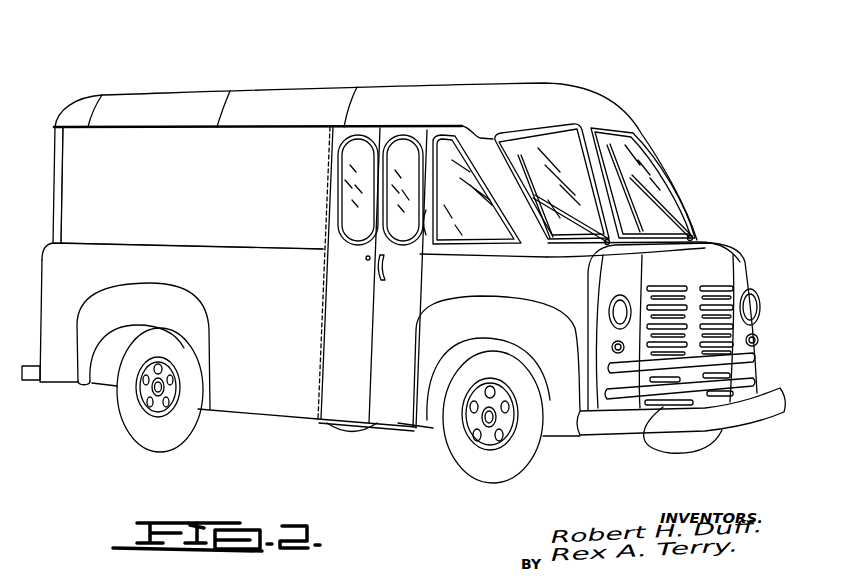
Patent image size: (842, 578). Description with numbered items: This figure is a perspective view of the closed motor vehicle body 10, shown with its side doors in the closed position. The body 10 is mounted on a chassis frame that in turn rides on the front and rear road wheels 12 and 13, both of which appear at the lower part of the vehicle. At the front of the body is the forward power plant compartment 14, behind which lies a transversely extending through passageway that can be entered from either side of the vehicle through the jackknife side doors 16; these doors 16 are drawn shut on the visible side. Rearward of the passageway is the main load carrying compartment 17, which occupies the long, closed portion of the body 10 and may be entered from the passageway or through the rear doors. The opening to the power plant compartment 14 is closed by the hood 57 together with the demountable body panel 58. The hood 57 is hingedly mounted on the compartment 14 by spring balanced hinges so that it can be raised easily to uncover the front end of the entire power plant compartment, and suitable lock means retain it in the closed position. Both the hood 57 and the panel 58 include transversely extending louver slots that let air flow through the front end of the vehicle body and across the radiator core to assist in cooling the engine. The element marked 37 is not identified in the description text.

The closed motor vehicle body 10 is at (266, 90).
The front road wheels 12 is at (536, 468).
The rear road wheels 13 is at (133, 411).
The forward power plant compartment 14 is at (742, 256).
The jackknife side doors 16 is at (338, 312).
The main load carrying compartment 17 is at (180, 170).
The grille 37 is at (690, 300).
The hood 57 is at (713, 250).
The demountable body panel 58 is at (655, 436).